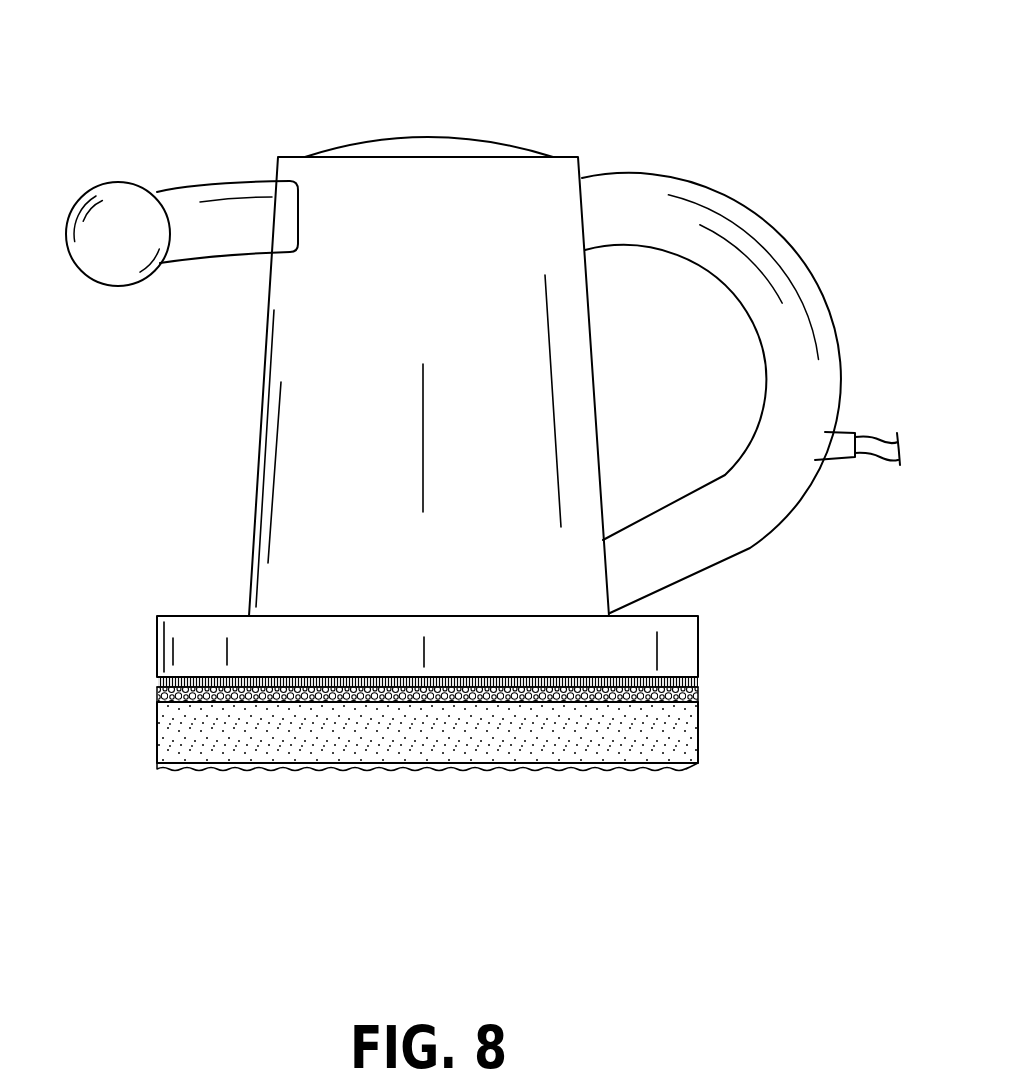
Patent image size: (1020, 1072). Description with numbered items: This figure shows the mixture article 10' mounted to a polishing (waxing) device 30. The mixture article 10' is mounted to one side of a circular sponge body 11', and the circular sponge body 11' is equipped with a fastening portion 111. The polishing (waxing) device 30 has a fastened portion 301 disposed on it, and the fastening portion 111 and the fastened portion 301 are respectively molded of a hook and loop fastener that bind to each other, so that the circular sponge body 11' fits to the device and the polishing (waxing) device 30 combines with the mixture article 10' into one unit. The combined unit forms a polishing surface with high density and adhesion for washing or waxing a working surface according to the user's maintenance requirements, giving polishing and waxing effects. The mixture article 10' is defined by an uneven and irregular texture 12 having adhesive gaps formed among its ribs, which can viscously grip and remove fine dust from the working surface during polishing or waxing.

The polishing (waxing) device 30 is at (615, 78).
The fastened portion 301 is at (698, 682).
The mixture article 10' is at (456, 728).
The fastening portion 111 is at (157, 690).
The circular sponge body 11' is at (389, 732).
The uneven and irregular texture 12 is at (157, 768).